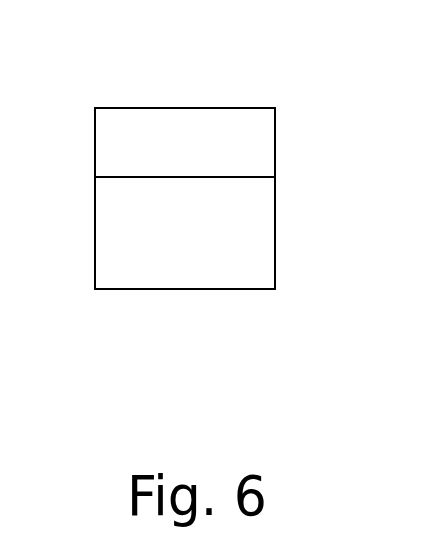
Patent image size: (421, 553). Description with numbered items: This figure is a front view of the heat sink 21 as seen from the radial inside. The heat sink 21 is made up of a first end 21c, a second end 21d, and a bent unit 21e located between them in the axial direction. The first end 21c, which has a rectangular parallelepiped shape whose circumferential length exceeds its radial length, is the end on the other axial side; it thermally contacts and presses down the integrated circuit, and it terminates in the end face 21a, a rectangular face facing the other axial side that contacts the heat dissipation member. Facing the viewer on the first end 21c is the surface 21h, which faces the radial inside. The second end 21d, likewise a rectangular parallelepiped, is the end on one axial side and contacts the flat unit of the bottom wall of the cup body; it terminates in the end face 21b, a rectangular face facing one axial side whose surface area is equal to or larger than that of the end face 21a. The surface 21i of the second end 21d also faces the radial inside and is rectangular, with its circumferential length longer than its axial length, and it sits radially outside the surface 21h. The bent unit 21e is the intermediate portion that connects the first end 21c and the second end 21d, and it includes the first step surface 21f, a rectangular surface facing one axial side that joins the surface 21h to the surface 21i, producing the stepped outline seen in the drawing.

The heat sink 21 is at (300, 161).
The end face 21a is at (203, 107).
The end face 21b is at (214, 290).
The first end 21c is at (134, 107).
The second end 21d is at (136, 290).
The bent unit 21e is at (131, 179).
The first step surface 21f is at (235, 180).
The surface 21h is at (118, 148).
The surface 21i is at (118, 242).